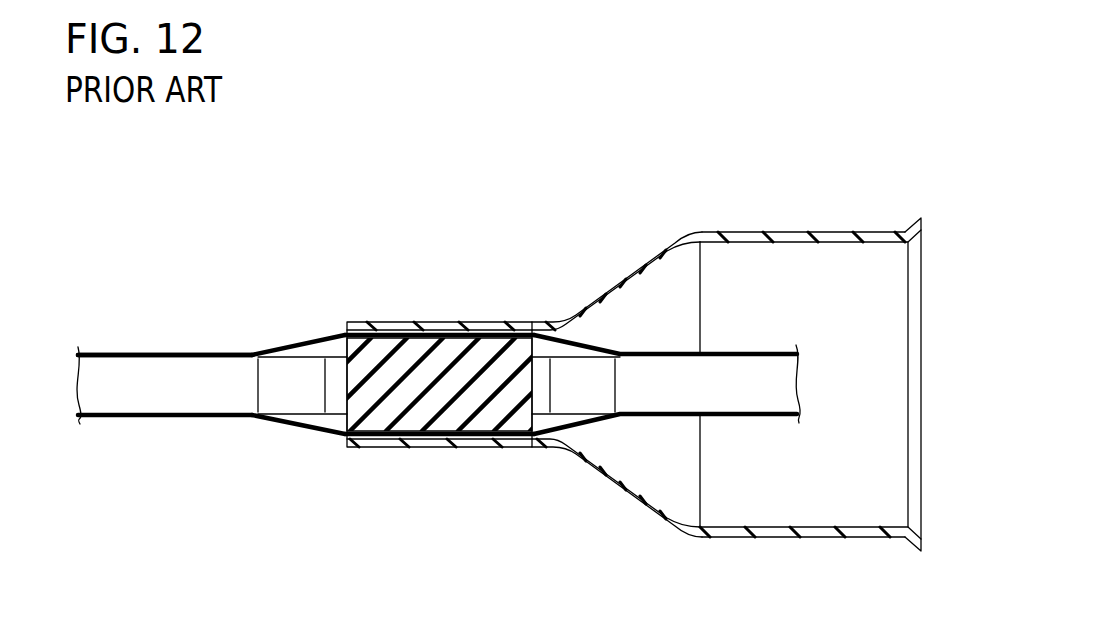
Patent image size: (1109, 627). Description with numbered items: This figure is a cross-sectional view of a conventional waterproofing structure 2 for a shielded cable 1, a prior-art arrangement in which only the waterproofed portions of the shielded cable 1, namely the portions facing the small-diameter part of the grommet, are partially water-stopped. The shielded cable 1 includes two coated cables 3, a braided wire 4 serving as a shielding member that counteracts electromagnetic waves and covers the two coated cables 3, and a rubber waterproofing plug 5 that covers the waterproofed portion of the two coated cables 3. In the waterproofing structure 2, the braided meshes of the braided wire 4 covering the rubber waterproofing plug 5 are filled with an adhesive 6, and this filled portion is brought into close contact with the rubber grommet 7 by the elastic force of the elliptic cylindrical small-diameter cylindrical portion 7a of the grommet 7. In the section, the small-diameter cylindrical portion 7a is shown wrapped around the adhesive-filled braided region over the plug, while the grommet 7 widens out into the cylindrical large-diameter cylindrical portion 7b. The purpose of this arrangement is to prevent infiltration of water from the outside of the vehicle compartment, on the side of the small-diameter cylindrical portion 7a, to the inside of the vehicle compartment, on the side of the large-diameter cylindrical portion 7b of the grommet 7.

The shielded cable 1 is at (167, 353).
The waterproofing structure 2 is at (477, 449).
The coated cables 3 is at (152, 403).
The braided wire 4 is at (298, 436).
The rubber waterproofing plug 5 is at (412, 431).
The adhesive 6 is at (486, 332).
The grommet 7 is at (648, 508).
The elliptic cylindrical small-diameter cylindrical portion 7a is at (440, 326).
The cylindrical large-diameter cylindrical portion 7b is at (797, 232).